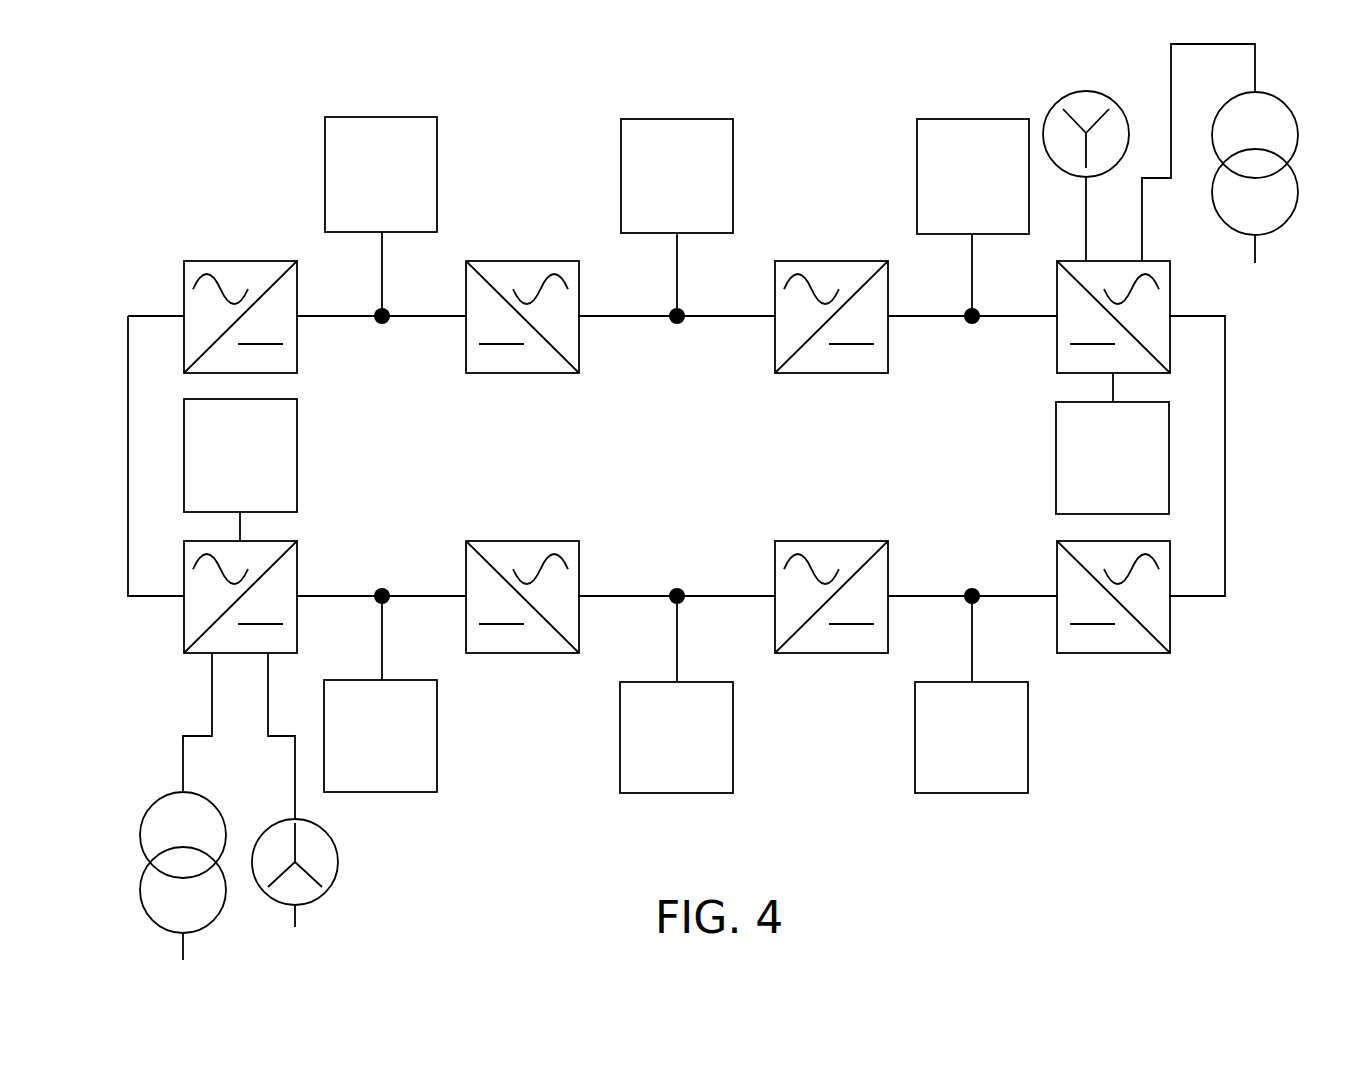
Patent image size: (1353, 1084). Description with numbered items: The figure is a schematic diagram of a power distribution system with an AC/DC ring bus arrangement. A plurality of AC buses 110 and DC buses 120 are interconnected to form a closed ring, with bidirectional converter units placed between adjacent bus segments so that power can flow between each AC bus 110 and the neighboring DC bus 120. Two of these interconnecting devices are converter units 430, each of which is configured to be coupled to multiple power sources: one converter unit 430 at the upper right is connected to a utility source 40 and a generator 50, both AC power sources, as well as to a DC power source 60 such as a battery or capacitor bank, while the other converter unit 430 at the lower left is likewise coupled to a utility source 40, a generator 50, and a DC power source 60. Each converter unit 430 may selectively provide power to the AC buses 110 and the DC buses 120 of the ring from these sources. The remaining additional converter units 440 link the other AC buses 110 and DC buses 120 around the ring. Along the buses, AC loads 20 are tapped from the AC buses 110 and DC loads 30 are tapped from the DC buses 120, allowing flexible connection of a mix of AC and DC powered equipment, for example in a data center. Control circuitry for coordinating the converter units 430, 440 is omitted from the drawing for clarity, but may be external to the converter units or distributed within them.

The AC load 20 is at (677, 119).
The DC load 30 is at (382, 117).
The utility source 40 is at (1212, 137).
The generator 50 is at (1086, 91).
The DC power source 60 is at (184, 455).
The AC bus 110 is at (157, 316).
The DC bus 120 is at (437, 316).
The converter unit 430 is at (1057, 290).
The additional converter unit 440 is at (240, 261).